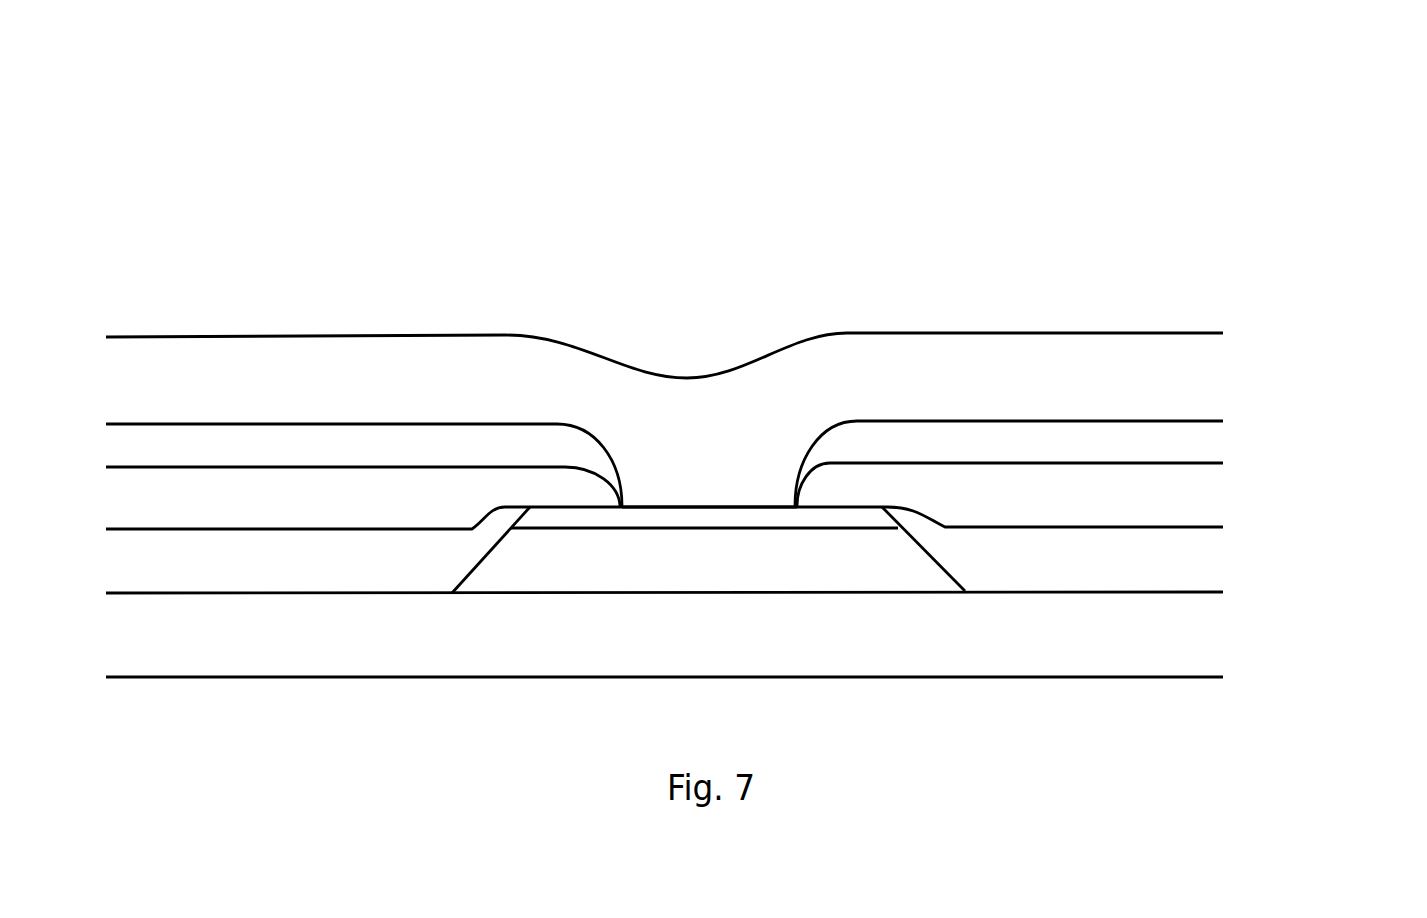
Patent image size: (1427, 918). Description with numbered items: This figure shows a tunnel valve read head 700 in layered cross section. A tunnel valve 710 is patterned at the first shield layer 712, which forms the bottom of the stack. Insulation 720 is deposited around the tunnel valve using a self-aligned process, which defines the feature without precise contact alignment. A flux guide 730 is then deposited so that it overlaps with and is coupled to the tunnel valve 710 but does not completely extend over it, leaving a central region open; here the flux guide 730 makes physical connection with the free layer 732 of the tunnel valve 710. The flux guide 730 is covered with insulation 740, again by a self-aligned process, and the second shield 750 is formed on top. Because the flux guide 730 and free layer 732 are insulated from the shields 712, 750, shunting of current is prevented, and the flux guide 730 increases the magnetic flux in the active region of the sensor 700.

The tunnel valve read head 700 is at (940, 138).
The tunnel valve 710 is at (688, 547).
The first shield layer 712 is at (862, 633).
The insulation 720 is at (1182, 568).
The flux guide 730 is at (1178, 505).
The free layer 732 is at (645, 506).
The insulation 740 is at (1157, 443).
The second shield 750 is at (1093, 377).